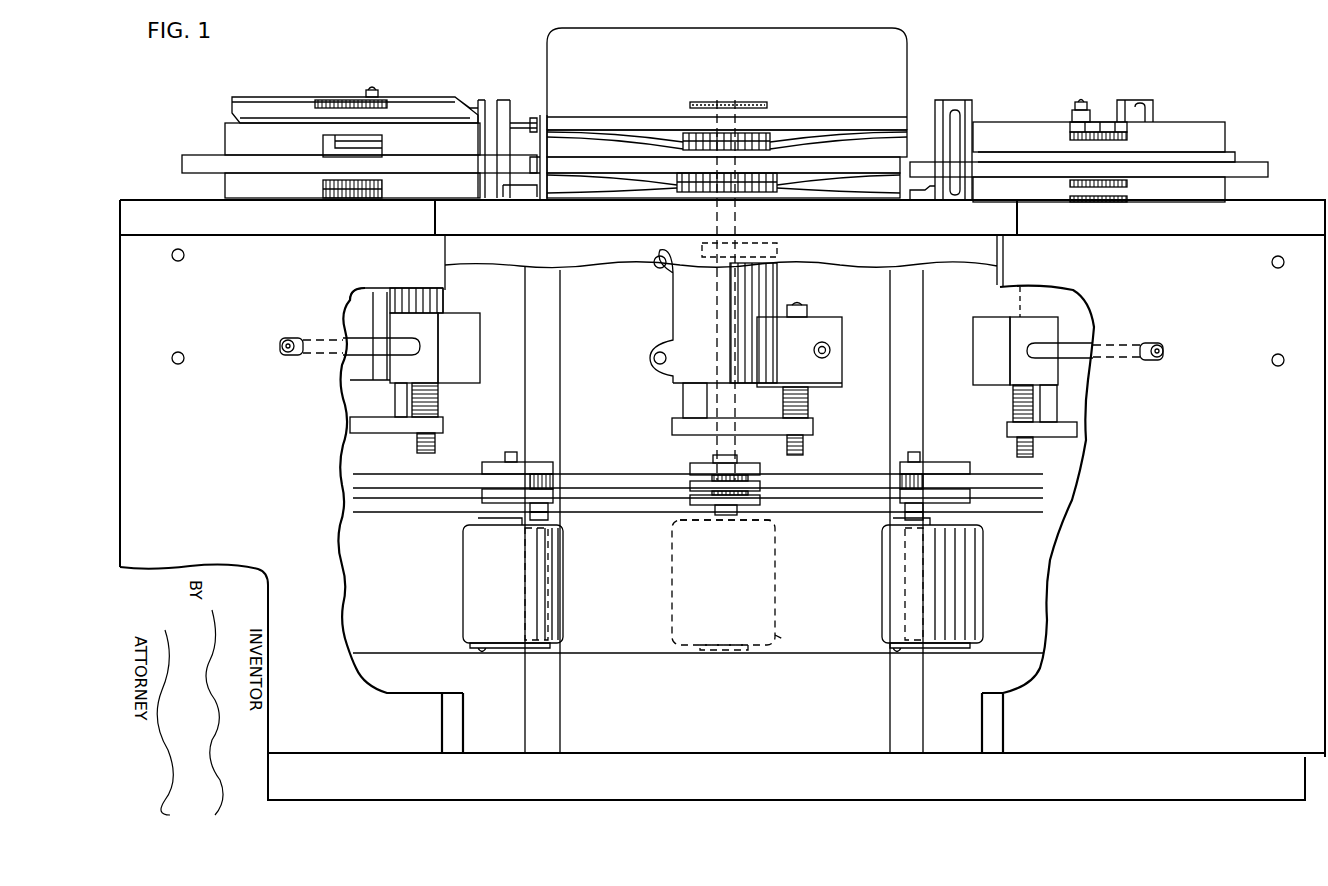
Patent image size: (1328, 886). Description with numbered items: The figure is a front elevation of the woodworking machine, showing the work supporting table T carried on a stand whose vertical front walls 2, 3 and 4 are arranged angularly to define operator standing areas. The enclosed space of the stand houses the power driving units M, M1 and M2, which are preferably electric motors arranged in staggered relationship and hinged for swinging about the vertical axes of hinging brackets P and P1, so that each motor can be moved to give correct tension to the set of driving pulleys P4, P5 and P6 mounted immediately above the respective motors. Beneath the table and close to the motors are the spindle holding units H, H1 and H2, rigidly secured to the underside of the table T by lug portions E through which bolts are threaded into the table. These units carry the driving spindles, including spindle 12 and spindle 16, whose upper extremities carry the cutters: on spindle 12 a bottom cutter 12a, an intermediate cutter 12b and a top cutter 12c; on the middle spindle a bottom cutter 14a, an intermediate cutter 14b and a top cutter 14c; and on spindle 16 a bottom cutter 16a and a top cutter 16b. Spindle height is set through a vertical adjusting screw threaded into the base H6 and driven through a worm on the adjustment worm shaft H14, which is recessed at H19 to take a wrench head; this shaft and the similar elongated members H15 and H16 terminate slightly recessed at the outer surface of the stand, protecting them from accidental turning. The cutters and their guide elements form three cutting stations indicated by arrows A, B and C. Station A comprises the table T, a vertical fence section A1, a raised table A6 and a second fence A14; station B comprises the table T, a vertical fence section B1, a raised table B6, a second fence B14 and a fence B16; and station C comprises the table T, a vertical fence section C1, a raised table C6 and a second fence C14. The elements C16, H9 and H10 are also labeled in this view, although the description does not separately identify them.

The work supporting table T is at (1281, 205).
The vertical front wall 2 is at (308, 299).
The vertical front wall 3 is at (721, 260).
The vertical front wall 4 is at (1302, 318).
The cutting station A is at (346, 124).
The vertical fence section A1 is at (222, 187).
The raised table A6 is at (186, 156).
The second fence A14 is at (228, 137).
The driving spindle 12 is at (376, 90).
The bottom cutter 12a is at (334, 199).
The intermediate cutter 12b is at (326, 148).
The top cutter 12c is at (318, 100).
The cutting station B is at (755, 244).
The vertical fence section B1 is at (549, 196).
The raised table B6 is at (571, 163).
The second fence B14 is at (897, 147).
The fence B16 is at (895, 67).
The bottom cutter 14a is at (773, 195).
The intermediate cutter 14b is at (762, 137).
The top cutter 14c is at (753, 102).
The cutting station C is at (1119, 134).
The vertical fence section C1 is at (1228, 199).
The raised table C6 is at (1253, 166).
The second fence C14 is at (1212, 135).
The bracket of unit C C16 is at (1235, 150).
The driving spindle 16 is at (1082, 106).
The bottom cutter 16a is at (1128, 187).
The top cutter 16b is at (1075, 133).
The lug portions E is at (780, 250).
The spindle holding unit H is at (755, 354).
The spindle holding unit H1 is at (393, 370).
The spindle holding unit H2 is at (1067, 372).
The base H6 is at (773, 425).
The upper pivot H9 is at (656, 268).
The lower pivot H10 is at (655, 363).
The adjustment worm shaft H14 is at (830, 351).
The adjustment worm shaft H15 is at (352, 356).
The adjustment worm shaft H16 is at (1075, 357).
The recess H19 is at (836, 387).
The hinging bracket P is at (537, 513).
The hinging bracket P1 is at (913, 515).
The driving pulley P4 is at (553, 465).
The driving pulley P5 is at (750, 468).
The driving pulley P6 is at (950, 465).
The power driving unit M is at (788, 653).
The power driving unit M1 is at (507, 630).
The power driving unit M2 is at (958, 630).